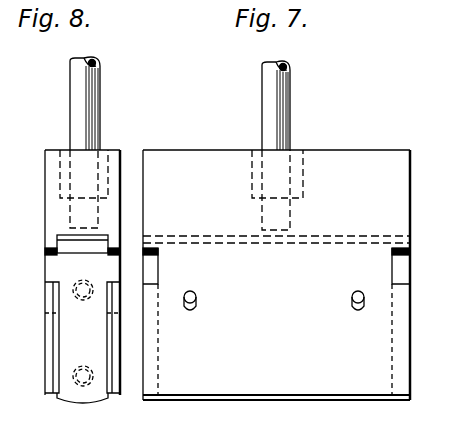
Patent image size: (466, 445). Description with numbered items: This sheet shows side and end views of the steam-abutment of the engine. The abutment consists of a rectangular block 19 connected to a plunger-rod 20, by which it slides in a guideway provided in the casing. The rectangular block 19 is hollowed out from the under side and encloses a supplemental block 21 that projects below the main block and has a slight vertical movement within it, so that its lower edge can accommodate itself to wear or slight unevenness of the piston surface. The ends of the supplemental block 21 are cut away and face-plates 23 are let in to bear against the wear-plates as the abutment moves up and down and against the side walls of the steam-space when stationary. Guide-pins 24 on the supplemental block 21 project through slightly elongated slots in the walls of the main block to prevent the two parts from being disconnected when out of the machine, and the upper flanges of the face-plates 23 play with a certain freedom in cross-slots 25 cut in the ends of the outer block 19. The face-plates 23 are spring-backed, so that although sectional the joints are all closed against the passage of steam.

In FIG. 8, the rectangular block 19 is at (110, 209).
In FIG. 7, the rectangular block 19 is at (276, 275).
In FIG. 8, the plunger-rod 20 is at (96, 103).
In FIG. 7, the plunger-rod 20 is at (288, 105).
In FIG. 8, the supplemental block 21 is at (93, 248).
In FIG. 7, the supplemental block 21 is at (312, 402).
In FIG. 8, the face-plates 23 is at (55, 360).
In FIG. 7, the face-plates 23 is at (400, 362).
In FIG. 8, the guide-pins 24 is at (45, 312).
In FIG. 7, the guide-pins 24 is at (195, 301).
In FIG. 8, the cross-slots 25 is at (45, 253).
In FIG. 7, the cross-slots 25 is at (155, 250).